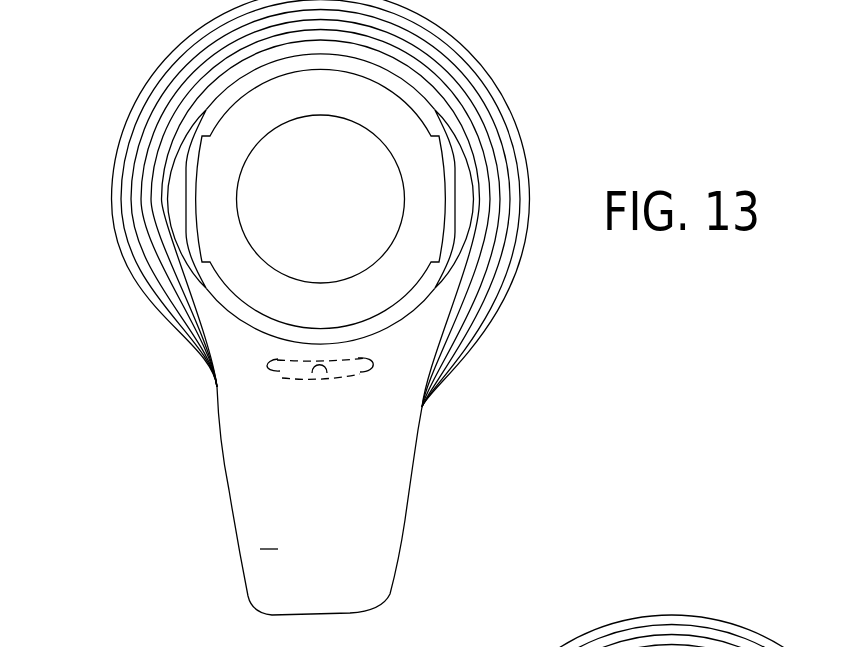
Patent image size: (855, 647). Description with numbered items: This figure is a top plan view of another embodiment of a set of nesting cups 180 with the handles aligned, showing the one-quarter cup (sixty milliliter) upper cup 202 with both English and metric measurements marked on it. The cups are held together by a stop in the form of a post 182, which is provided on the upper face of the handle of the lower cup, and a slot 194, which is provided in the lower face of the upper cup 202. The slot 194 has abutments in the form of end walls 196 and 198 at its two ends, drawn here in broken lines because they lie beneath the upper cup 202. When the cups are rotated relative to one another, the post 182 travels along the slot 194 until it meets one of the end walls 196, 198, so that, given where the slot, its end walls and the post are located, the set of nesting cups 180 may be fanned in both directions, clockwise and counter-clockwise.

The set of nesting cups 180 is at (307, 307).
The post 182 is at (319, 376).
The slot 194 is at (345, 360).
The end wall 196 is at (277, 375).
The end wall 198 is at (360, 373).
The upper cup 202 is at (377, 503).